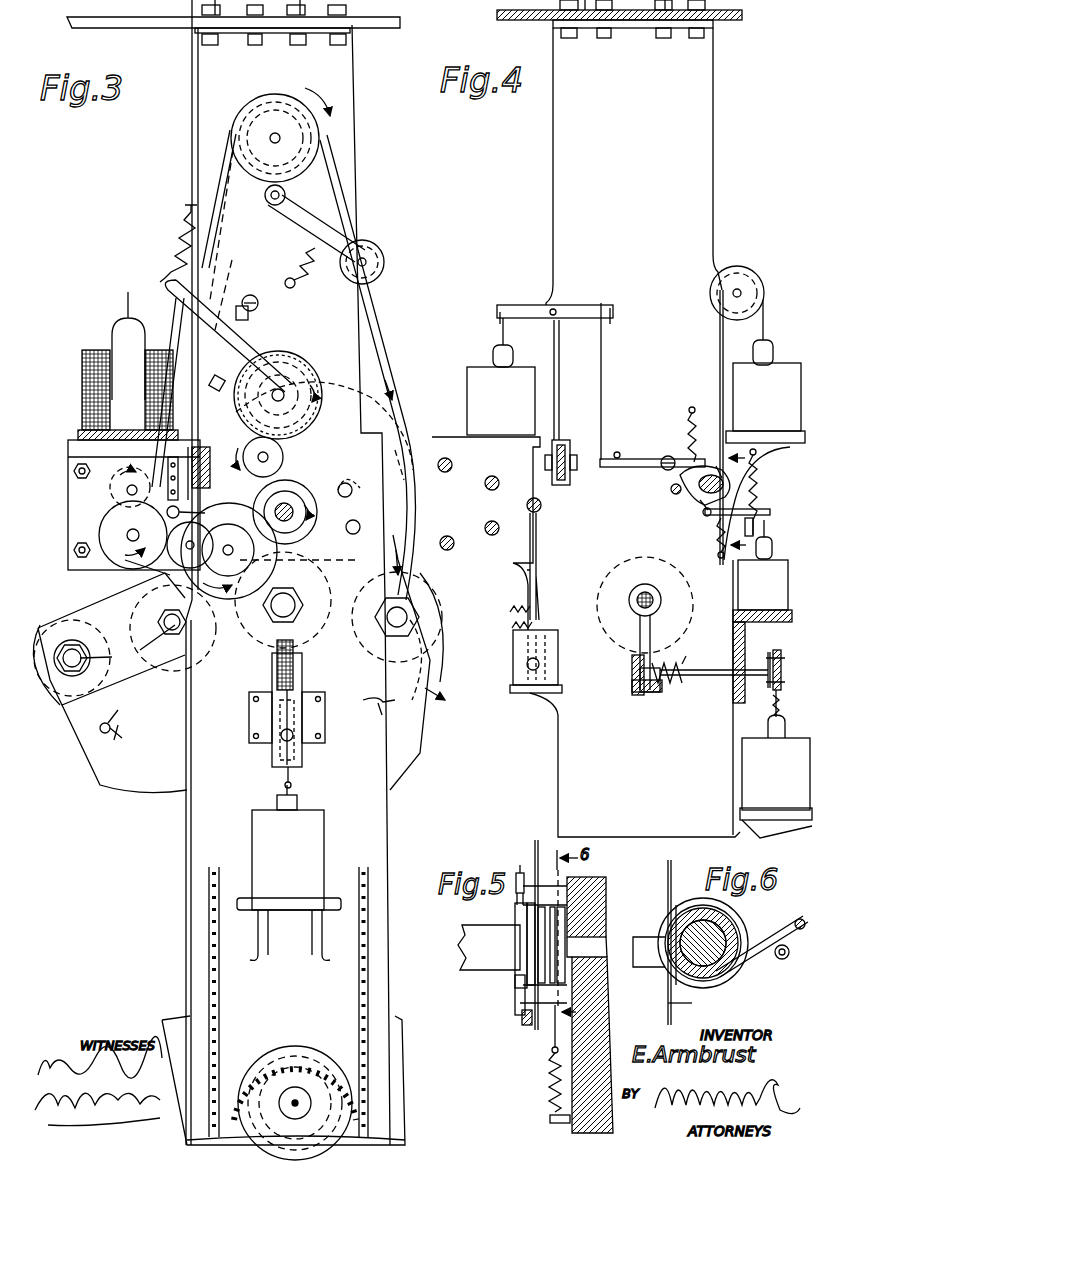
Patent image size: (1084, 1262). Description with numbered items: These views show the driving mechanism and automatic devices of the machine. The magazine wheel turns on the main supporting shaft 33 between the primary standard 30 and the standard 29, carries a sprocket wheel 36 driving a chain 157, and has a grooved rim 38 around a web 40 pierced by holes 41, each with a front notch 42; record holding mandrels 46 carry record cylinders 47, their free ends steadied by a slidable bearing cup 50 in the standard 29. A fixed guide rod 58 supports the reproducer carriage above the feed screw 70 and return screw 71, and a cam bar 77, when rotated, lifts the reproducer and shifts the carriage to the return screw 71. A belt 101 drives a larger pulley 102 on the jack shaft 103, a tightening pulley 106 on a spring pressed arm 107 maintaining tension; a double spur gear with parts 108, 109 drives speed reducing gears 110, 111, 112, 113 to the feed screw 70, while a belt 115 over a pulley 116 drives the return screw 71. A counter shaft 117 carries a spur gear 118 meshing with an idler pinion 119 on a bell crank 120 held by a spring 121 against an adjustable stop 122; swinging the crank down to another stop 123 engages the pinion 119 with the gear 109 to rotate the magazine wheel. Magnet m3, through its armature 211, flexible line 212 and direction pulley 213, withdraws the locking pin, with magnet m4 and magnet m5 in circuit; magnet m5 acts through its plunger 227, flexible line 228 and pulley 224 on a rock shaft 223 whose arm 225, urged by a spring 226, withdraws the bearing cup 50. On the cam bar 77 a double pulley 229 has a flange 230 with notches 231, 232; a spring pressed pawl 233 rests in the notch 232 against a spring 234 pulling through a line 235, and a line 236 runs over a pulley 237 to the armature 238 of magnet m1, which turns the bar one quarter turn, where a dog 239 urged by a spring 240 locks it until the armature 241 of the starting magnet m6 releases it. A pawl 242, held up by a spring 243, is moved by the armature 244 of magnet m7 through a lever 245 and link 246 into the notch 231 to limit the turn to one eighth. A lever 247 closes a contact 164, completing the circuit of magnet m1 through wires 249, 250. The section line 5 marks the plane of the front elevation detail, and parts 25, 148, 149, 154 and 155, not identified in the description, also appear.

In FIG. 4, the supporting bar 25 is at (497, 17).
In FIG. 4, the standard 29 is at (568, 143).
In FIG. 3, the primary standard 30 is at (345, 102).
In FIG. 3, the main supporting shaft 33 is at (285, 1098).
In FIG. 3, the sprocket wheel 36 is at (300, 1042).
In FIG. 4, the grooved rim 38 is at (435, 590).
In FIG. 3, the web 40 is at (410, 712).
In FIG. 3, the holes 41 is at (112, 714).
In FIG. 3, the groove or notch 42 is at (252, 725).
In FIG. 3, the record holding mandrel 46 is at (104, 658).
In FIG. 3, the record cylinder 47 is at (60, 702).
In FIG. 4, the bearing cup 50 is at (645, 596).
In FIG. 3, the guide rod 58 is at (193, 537).
In FIG. 4, the guide rod 58 is at (542, 504).
In FIG. 3, the feed screw 70 is at (130, 533).
In FIG. 4, the feed screw 70 is at (492, 535).
In FIG. 3, the return screw 71 is at (127, 490).
In FIG. 4, the return screw 71 is at (492, 484).
In FIG. 3, the cam bar 77 is at (349, 500).
In FIG. 4, the cam bar 77 is at (702, 512).
In FIG. 5, the cam bar 77 is at (470, 932).
In FIG. 6, the cam bar 77 is at (640, 967).
In FIG. 3, the belt 101 is at (368, 340).
In FIG. 3, the larger pulley 102 is at (398, 468).
In FIG. 3, the jack shaft 103 is at (288, 517).
In FIG. 3, the belt tightening pulley 106 is at (366, 250).
In FIG. 3, the spring pressed arm 107 is at (305, 237).
In FIG. 3, the pinion 108 is at (290, 490).
In FIG. 3, the gear 109 is at (306, 508).
In FIG. 3, the speed reducing gear 110 is at (225, 512).
In FIG. 3, the speed reducing gear 111 is at (228, 543).
In FIG. 3, the speed reducing gear 112 is at (172, 618).
In FIG. 3, the speed reducing gear 113 is at (125, 570).
In FIG. 3, the belt 115 is at (176, 316).
In FIG. 3, the pulley 116 is at (118, 472).
In FIG. 3, the counter shaft 117 is at (280, 393).
In FIG. 3, the spur gear 118 is at (310, 405).
In FIG. 3, the idler pinion 119 is at (257, 450).
In FIG. 3, the bell crank 120 is at (245, 322).
In FIG. 3, the spring 121 is at (168, 243).
In FIG. 3, the adjustable stop 122 is at (258, 305).
In FIG. 3, the adjustable stop 123 is at (219, 390).
In FIG. 3, the rod 148 is at (195, 172).
In FIG. 4, the rod 148 is at (550, 380).
In FIG. 4, the clamp 149 is at (563, 452).
In FIG. 3, the bar 154 is at (191, 484).
In FIG. 3, the crank pin 155 is at (144, 483).
In FIG. 3, the chain 157 is at (219, 987).
In FIG. 4, the contact 164 is at (528, 665).
In FIG. 3, the armature 211 is at (296, 800).
In FIG. 3, the flexible line 212 is at (285, 775).
In FIG. 3, the direction pulley 213 is at (292, 671).
In FIG. 4, the rock shaft 223 is at (712, 677).
In FIG. 4, the pulley 224 is at (781, 662).
In FIG. 4, the arm 225 is at (650, 641).
In FIG. 4, the spring 226 is at (668, 684).
In FIG. 4, the plunger 227 is at (768, 729).
In FIG. 4, the flexible line 228 is at (774, 707).
In FIG. 5, the double pulley 229 is at (560, 927).
In FIG. 6, the double pulley 229 is at (668, 933).
In FIG. 4, the flange 230 is at (698, 483).
In FIG. 5, the flange 230 is at (520, 953).
In FIG. 6, the flange 230 is at (732, 910).
In FIG. 4, the notch 231 is at (712, 468).
In FIG. 5, the notch 231 is at (517, 913).
In FIG. 6, the notch 231 is at (678, 905).
In FIG. 6, the notch 232 is at (725, 965).
In FIG. 4, the spring pressed pawl 233 is at (680, 494).
In FIG. 6, the spring pressed pawl 233 is at (775, 948).
In FIG. 4, the spring 234 is at (718, 536).
In FIG. 5, the spring 234 is at (549, 1092).
In FIG. 4, the line 235 is at (702, 514).
In FIG. 5, the line 235 is at (553, 1030).
In FIG. 6, the line 235 is at (691, 1005).
In FIG. 4, the line 236 is at (719, 336).
In FIG. 5, the line 236 is at (535, 862).
In FIG. 6, the line 236 is at (667, 876).
In FIG. 4, the pulley 237 is at (745, 278).
In FIG. 4, the armature 238 is at (766, 345).
In FIG. 4, the dog 239 is at (749, 526).
In FIG. 5, the dog 239 is at (520, 1005).
In FIG. 4, the spring 240 is at (758, 475).
In FIG. 4, the armature 241 is at (773, 550).
In FIG. 4, the pawl 242 is at (678, 446).
In FIG. 5, the pawl 242 is at (516, 890).
In FIG. 4, the spring 243 is at (692, 430).
In FIG. 4, the armature 244 is at (510, 356).
In FIG. 4, the lever 245 is at (580, 310).
In FIG. 4, the link 246 is at (602, 428).
In FIG. 4, the lever 247 is at (537, 553).
In FIG. 4, the wire 249 is at (510, 610).
In FIG. 4, the wire 250 is at (512, 627).
In FIG. 4, the section line 5 is at (740, 503).
In FIG. 5, the section line 5 is at (587, 1005).
In FIG. 4, the magnet m1 is at (750, 383).
In FIG. 3, the magnet m3 is at (310, 838).
In FIG. 3, the magnet m4 is at (85, 368).
In FIG. 4, the magnet m5 is at (752, 766).
In FIG. 4, the starting magnet m6 is at (738, 598).
In FIG. 4, the magnet m7 is at (478, 400).